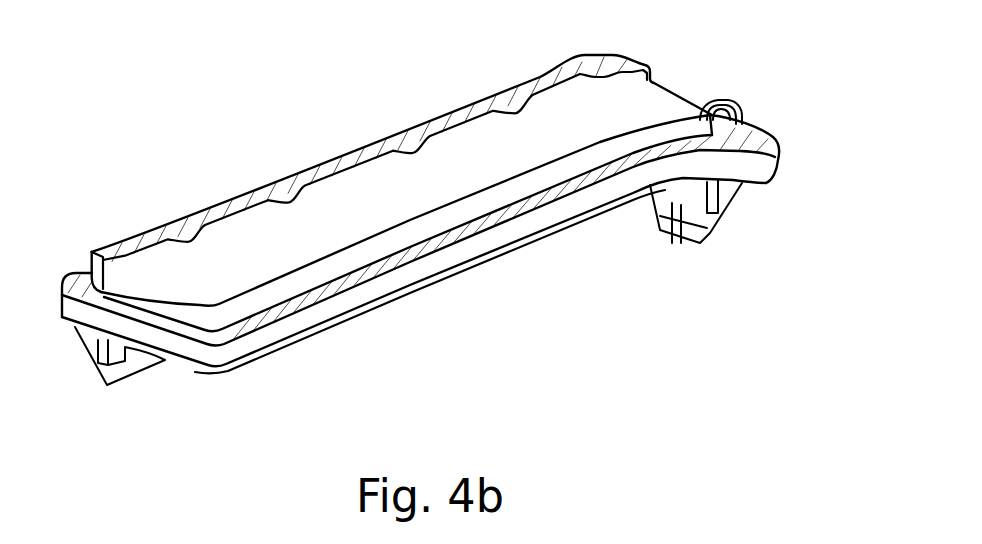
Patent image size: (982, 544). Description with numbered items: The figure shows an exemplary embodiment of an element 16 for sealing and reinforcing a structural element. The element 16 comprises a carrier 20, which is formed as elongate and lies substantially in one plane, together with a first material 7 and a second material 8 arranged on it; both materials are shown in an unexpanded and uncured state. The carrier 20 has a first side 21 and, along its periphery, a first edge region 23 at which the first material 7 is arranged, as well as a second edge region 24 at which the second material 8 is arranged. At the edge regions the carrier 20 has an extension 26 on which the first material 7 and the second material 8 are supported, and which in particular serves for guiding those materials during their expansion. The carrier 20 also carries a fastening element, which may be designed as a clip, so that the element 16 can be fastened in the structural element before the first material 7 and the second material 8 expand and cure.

The element for sealing and reinforcing a structural element 16 is at (249, 77).
The first material 7 is at (291, 190).
The first edge region 23 is at (328, 178).
The carrier 20 is at (463, 167).
The first side 21 is at (372, 207).
The second edge region 24 is at (452, 214).
The extension 26 is at (393, 297).
The second material 8 is at (757, 143).